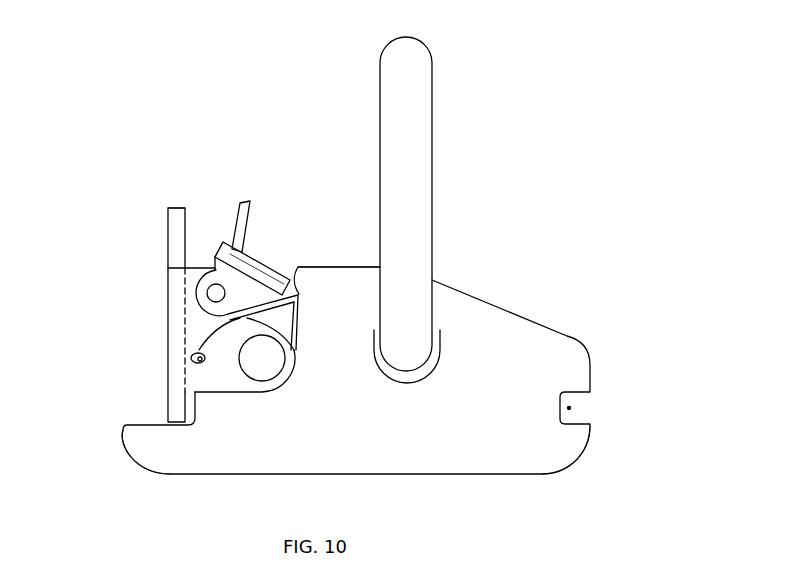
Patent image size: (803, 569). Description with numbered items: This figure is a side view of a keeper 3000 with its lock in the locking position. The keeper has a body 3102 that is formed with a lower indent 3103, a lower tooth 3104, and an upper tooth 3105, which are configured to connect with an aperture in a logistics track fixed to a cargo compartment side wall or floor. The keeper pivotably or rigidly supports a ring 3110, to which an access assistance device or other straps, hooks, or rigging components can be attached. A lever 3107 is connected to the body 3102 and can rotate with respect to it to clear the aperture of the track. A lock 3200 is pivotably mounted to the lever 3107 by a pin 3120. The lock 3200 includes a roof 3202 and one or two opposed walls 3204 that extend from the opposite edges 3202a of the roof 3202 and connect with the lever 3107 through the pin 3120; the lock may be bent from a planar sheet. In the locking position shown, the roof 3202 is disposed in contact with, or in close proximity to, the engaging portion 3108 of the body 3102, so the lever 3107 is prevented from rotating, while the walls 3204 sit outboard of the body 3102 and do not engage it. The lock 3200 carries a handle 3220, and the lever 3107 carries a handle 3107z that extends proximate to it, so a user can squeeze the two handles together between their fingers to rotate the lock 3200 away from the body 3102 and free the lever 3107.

The tool assembly 3000 is at (648, 126).
The body 3102 is at (340, 431).
The lower indent 3103 is at (569, 408).
The lower tooth 3104 is at (567, 438).
The upper tooth 3105 is at (143, 445).
The lever 3107 is at (178, 338).
The handle 3107z is at (172, 208).
The engaging portion 3108 is at (301, 272).
The ring 3110 is at (420, 178).
The pin 3120 is at (207, 293).
The lock 3200 is at (252, 280).
The roof 3202 is at (252, 268).
The opposite edges 3202a is at (298, 268).
The opposed walls 3204 is at (220, 258).
The handle 3220 is at (243, 203).